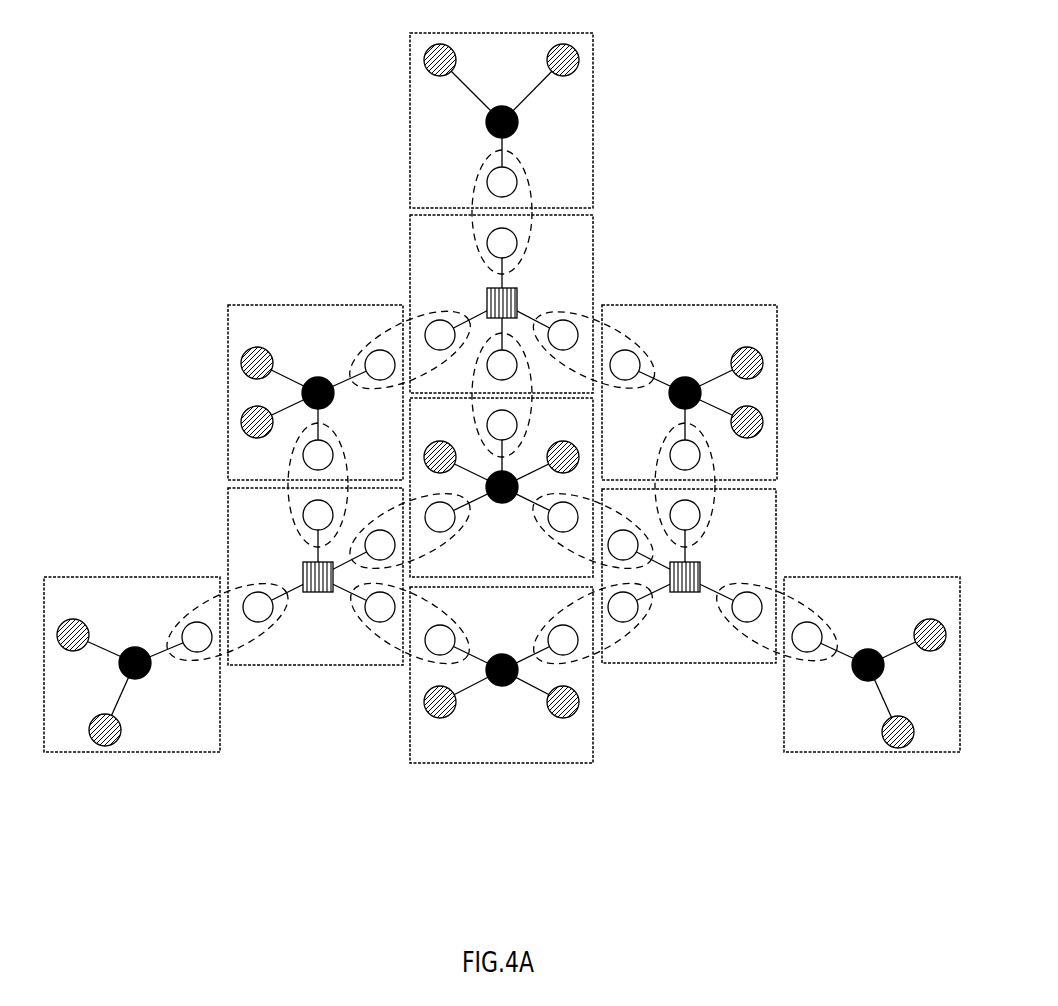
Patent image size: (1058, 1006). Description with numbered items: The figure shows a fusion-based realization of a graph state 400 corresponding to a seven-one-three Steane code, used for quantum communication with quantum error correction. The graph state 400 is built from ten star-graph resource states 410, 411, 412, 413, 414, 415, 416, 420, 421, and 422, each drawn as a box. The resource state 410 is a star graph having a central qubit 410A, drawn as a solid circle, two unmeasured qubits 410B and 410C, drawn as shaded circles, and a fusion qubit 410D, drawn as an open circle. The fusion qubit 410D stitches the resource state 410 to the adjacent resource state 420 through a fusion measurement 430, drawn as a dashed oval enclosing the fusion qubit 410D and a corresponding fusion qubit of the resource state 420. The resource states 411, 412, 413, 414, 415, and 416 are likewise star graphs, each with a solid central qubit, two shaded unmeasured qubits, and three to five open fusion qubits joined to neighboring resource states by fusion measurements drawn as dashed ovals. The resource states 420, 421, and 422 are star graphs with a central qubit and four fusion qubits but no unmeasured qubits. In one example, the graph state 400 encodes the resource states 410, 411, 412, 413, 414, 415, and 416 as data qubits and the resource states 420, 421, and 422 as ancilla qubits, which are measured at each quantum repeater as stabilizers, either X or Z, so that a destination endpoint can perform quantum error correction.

The fusion-based graph state 400 is at (229, 85).
The resource state 410 is at (410, 137).
The central qubit 410A is at (513, 137).
The unmeasured qubit 410B is at (563, 77).
The unmeasured qubit 410C is at (441, 77).
The fusion qubit 410D is at (488, 138).
The fusion measurement 430 is at (478, 184).
The resource state 420 is at (597, 278).
The resource state 411 is at (227, 408).
The resource state 415 is at (778, 373).
The resource state 416 is at (514, 561).
The resource state 421 is at (325, 667).
The resource state 422 is at (700, 665).
The resource state 412 is at (152, 577).
The resource state 414 is at (865, 577).
The resource state 413 is at (512, 765).